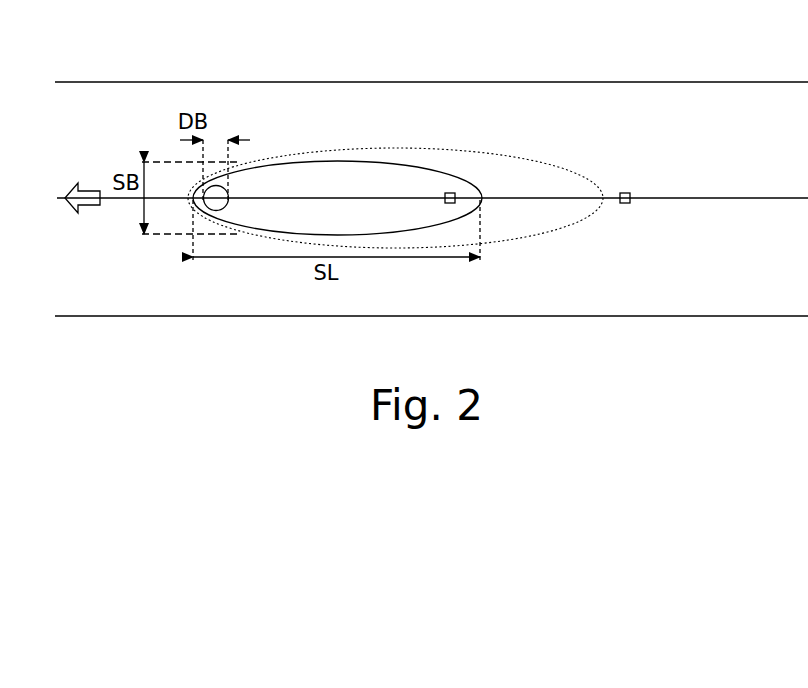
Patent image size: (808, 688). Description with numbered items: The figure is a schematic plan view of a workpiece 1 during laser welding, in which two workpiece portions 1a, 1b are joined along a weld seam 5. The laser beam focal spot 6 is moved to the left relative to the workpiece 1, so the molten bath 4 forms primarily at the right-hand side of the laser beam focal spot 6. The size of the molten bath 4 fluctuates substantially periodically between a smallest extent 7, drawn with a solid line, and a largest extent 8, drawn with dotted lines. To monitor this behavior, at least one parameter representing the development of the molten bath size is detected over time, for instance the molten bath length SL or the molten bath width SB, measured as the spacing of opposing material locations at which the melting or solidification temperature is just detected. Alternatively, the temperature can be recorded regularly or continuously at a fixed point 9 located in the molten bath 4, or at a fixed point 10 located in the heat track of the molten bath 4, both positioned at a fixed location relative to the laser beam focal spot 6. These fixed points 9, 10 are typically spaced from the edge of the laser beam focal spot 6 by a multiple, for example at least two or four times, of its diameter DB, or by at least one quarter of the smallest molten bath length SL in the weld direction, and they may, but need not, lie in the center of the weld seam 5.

The workpiece 1 is at (431, 194).
The workpiece portion 1a is at (716, 118).
The workpiece portion 1b is at (741, 283).
The molten bath 4 is at (421, 191).
The weld seam 5 is at (667, 200).
The laser beam focal spot 6 is at (218, 206).
The smallest extent 7 is at (433, 166).
The largest extent 8 is at (532, 233).
The fixed point 9 is at (452, 192).
The fixed point 10 is at (626, 192).